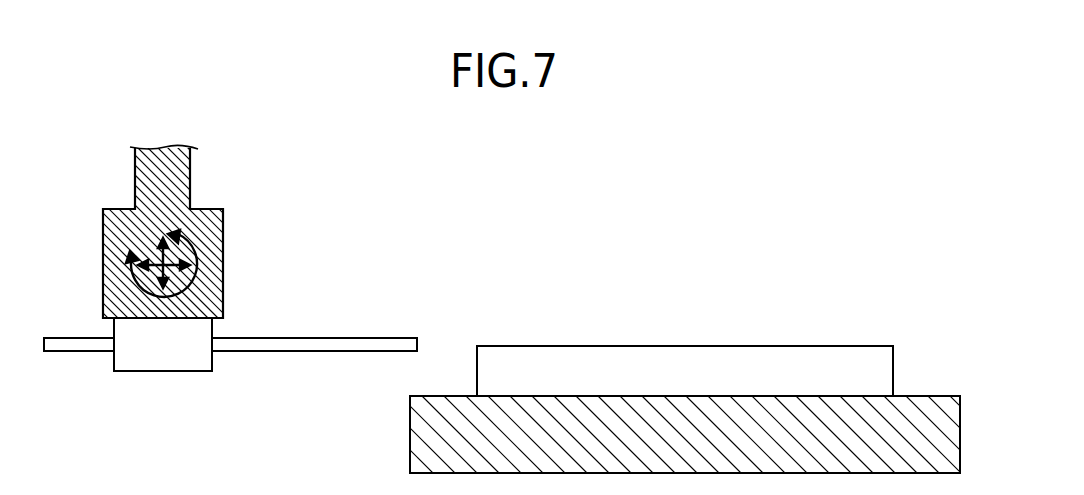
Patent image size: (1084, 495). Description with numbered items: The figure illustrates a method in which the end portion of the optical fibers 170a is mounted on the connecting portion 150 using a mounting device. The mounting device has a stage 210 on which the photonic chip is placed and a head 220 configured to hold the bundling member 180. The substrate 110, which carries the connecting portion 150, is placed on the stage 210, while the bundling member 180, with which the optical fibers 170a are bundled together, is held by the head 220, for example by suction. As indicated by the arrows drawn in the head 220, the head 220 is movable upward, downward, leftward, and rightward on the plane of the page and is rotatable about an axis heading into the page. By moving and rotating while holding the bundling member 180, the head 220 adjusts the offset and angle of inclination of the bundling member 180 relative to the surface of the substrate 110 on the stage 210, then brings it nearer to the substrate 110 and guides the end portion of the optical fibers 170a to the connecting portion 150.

The head 220 is at (225, 228).
The bundling member 180 is at (160, 371).
The optical fibers 170a is at (343, 338).
The stage 210 is at (935, 396).
The substrate 110 is at (811, 346).
The connecting portion 150 is at (539, 327).